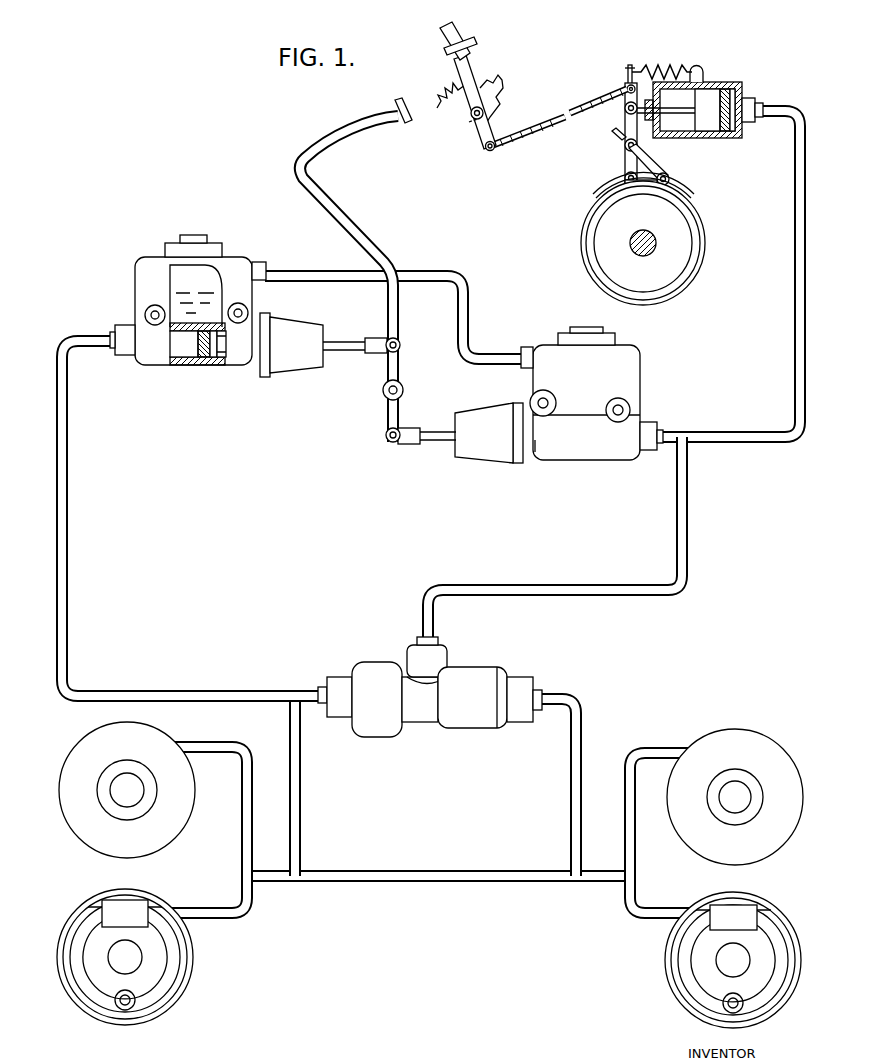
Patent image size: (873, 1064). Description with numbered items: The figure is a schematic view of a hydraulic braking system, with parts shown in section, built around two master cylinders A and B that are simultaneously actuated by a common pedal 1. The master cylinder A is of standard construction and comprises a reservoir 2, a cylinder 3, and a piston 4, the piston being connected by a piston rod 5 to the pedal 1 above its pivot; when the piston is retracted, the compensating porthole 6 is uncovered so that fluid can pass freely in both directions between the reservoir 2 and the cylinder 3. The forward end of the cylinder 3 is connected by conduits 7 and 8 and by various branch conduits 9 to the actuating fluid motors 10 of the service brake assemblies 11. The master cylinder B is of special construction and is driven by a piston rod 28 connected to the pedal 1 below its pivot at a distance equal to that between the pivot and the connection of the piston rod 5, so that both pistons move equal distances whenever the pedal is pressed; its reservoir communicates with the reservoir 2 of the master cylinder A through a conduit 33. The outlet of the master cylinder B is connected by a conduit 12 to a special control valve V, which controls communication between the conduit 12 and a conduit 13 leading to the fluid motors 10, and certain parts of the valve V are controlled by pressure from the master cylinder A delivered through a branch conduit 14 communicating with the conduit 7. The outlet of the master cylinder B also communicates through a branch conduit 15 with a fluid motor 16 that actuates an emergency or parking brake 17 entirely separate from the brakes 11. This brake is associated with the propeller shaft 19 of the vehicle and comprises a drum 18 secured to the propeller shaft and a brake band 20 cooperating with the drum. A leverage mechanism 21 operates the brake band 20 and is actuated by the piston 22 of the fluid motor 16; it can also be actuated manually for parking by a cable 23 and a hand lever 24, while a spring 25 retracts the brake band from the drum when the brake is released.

The pedal 1 is at (355, 237).
The reservoir 2 is at (191, 275).
The cylinder 3 is at (186, 366).
The piston 4 is at (208, 360).
The piston rod 5 is at (334, 344).
The compensating porthole 6 is at (193, 324).
The conduit 7 is at (69, 528).
The conduit 8 is at (304, 818).
The branch conduits 9 is at (255, 800).
The actuating fluid motors 10 is at (140, 912).
The service brake assemblies 11 is at (70, 916).
The conduit 12 is at (573, 585).
The conduit 13 is at (584, 732).
The branch conduit 14 is at (305, 688).
The branch conduit 15 is at (795, 254).
The fluid motor 16 is at (700, 91).
The emergency or parking brake 17 is at (656, 227).
The drum 18 is at (611, 231).
The propeller shaft 19 is at (645, 257).
The brake band 20 is at (605, 203).
The leverage mechanism 21 is at (625, 126).
The piston 22 is at (708, 120).
The cable 23 is at (540, 118).
The hand lever 24 is at (472, 92).
The spring 25 is at (660, 72).
The piston rod 28 is at (432, 428).
The conduit 33 is at (443, 269).
The master cylinder A is at (188, 299).
The master cylinder B is at (553, 332).
The control valve V is at (490, 660).